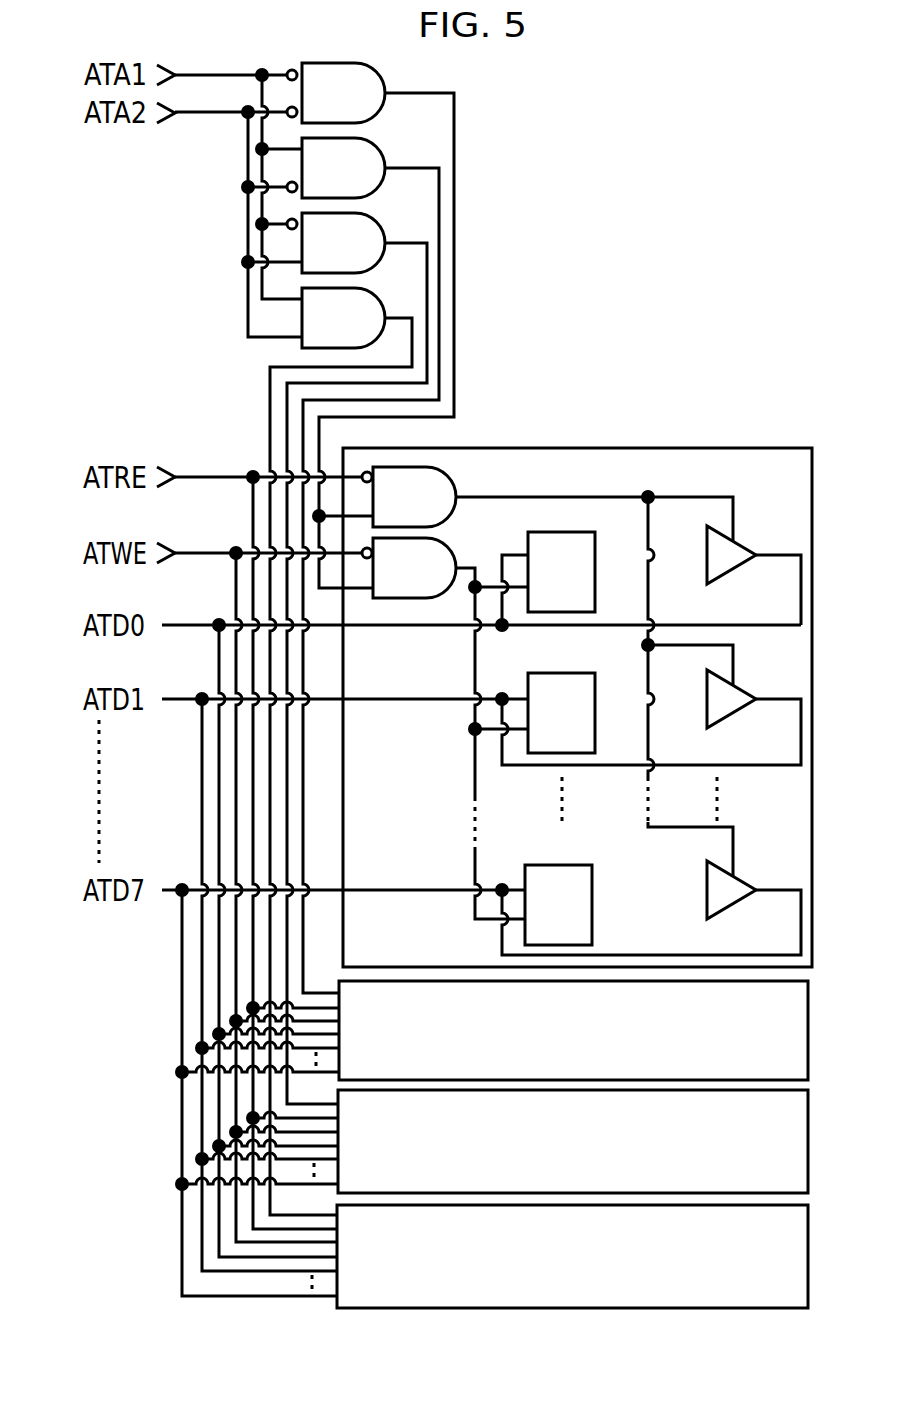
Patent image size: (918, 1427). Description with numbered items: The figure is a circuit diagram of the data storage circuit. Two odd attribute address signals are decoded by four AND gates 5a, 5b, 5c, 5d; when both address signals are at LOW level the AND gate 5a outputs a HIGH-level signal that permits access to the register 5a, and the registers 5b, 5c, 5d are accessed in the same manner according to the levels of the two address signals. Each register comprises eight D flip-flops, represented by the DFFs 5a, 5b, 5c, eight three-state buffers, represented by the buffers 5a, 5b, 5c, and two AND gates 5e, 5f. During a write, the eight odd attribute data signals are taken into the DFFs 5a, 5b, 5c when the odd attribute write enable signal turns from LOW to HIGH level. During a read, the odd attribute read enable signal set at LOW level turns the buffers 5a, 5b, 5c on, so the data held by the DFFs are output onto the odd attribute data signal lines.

The AND gate, register, D flip-flop and three-state buffer 5a is at (388, 71).
The AND gate, register, D flip-flop and three-state buffer 5b is at (388, 148).
The AND gate, register, D flip-flop and three-state buffer 5c is at (388, 223).
The AND gate and register 5d is at (388, 298).
The AND gate 5e is at (458, 486).
The AND gate 5f is at (395, 600).